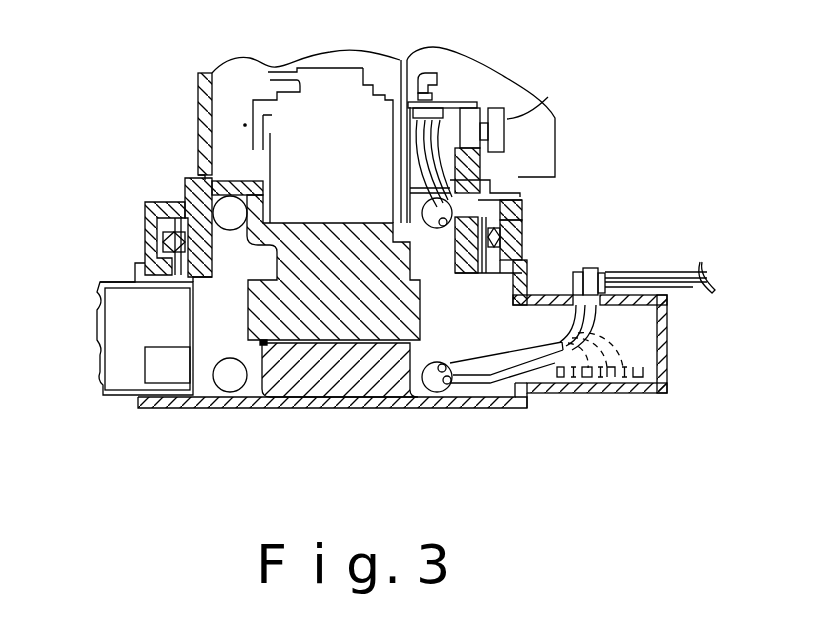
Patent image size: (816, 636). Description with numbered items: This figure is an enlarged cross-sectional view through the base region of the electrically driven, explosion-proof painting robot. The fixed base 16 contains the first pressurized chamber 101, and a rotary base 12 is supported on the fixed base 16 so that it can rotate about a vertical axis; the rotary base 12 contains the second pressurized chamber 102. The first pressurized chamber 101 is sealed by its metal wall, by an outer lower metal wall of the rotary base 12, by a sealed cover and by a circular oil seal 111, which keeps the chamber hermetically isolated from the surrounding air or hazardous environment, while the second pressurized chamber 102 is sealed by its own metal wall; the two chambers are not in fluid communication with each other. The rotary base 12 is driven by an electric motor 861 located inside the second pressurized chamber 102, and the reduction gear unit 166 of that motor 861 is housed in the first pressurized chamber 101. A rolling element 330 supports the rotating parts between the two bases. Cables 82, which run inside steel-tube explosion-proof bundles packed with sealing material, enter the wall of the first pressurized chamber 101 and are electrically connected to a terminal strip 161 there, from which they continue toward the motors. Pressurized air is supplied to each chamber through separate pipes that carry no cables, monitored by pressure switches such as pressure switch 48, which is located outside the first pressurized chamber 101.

The rotary base 12 is at (200, 118).
The second pressurized chamber 102 is at (232, 117).
The electric motor 861 is at (362, 140).
The oil seal 111 is at (520, 197).
The bearing 330 is at (500, 233).
The first pressurized chamber 101 is at (207, 312).
The pressure switch 48 is at (162, 367).
The reduction gear unit 166 is at (322, 298).
The fixed base 16 is at (317, 387).
The cables 82 is at (480, 362).
The terminal strip 161 is at (560, 380).